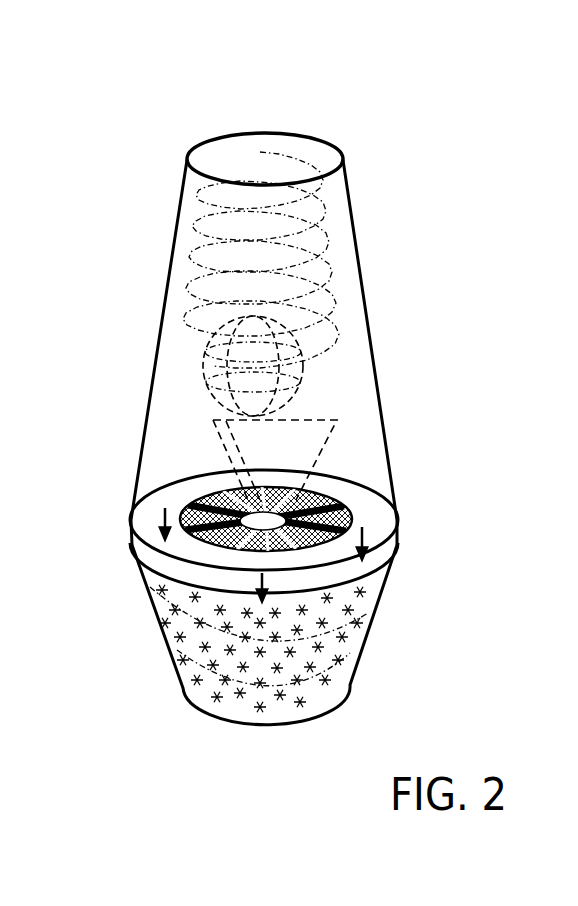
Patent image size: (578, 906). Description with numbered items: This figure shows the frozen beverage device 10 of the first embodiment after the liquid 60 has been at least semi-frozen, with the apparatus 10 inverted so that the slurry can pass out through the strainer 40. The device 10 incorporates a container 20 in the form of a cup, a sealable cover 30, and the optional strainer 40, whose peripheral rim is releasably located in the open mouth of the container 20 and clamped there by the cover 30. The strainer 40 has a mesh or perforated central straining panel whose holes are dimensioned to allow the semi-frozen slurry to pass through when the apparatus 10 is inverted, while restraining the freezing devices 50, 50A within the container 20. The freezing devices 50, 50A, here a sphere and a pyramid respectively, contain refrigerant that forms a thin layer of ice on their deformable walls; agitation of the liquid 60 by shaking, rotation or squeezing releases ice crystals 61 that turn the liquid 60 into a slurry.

The frozen beverage device 10 is at (422, 314).
The container 20 is at (351, 214).
The cover 30 is at (354, 676).
The strainer 40 is at (371, 521).
The freezing device 50 is at (201, 360).
The freezing device 50A is at (209, 447).
The liquid 60 is at (353, 639).
The ice crystals 61 is at (196, 678).